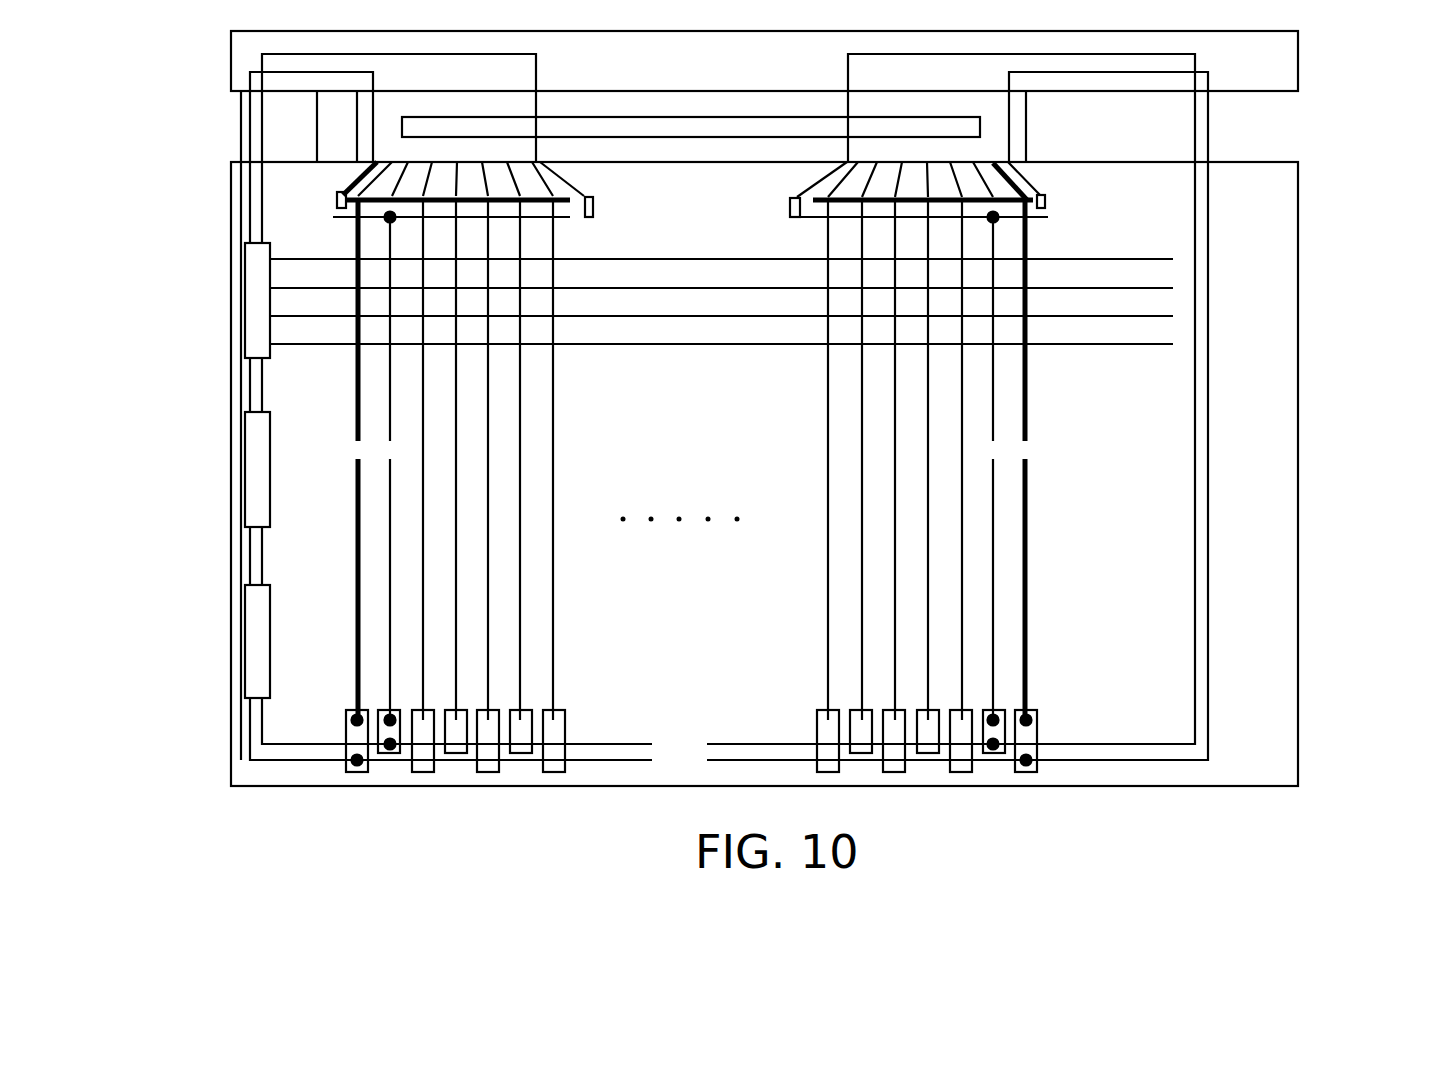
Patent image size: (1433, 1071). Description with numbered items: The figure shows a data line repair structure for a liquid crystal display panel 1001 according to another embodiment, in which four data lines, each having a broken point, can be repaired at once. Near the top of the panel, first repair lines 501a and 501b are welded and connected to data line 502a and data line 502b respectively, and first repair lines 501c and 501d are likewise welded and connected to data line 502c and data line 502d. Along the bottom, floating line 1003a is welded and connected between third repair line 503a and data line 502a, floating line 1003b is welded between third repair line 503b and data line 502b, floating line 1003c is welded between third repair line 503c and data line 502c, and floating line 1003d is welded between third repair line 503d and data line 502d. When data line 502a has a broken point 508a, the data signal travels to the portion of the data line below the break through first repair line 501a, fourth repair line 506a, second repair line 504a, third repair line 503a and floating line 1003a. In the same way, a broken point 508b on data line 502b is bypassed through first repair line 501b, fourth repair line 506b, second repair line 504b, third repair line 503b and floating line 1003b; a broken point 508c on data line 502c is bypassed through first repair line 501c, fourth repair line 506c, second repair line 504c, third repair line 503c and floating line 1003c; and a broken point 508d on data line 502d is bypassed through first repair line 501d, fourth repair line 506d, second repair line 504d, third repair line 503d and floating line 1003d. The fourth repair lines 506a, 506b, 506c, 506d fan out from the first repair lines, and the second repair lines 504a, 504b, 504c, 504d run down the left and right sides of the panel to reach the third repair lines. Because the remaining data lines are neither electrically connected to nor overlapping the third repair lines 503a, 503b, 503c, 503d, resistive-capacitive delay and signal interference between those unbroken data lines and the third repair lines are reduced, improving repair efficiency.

The display panel 1001 is at (1298, 546).
The first repair line 501a is at (566, 206).
The first repair line 501b is at (335, 217).
The first repair line 501c is at (1022, 174).
The first repair line 501d is at (805, 218).
The data line 502a is at (355, 372).
The data line 502b is at (388, 398).
The data line 502c is at (1028, 375).
The data line 502d is at (993, 411).
The third repair line 503a is at (295, 759).
The third repair line 503b is at (300, 742).
The third repair line 503c is at (1168, 759).
The third repair line 503d is at (1147, 743).
The second repair line 504a is at (262, 192).
The second repair line 504b is at (262, 213).
The second repair line 504c is at (1208, 407).
The second repair line 504d is at (1197, 452).
The fourth repair line 506a is at (340, 182).
The fourth repair line 506b is at (565, 186).
The fourth repair line 506c is at (1012, 172).
The fourth repair line 506d is at (823, 177).
The broken point 508a is at (340, 452).
The broken point 508b is at (402, 452).
The broken point 508c is at (1040, 448).
The broken point 508d is at (1005, 448).
The floating line 1003a is at (347, 747).
The floating line 1003b is at (389, 755).
The floating line 1003c is at (1035, 748).
The floating line 1003d is at (993, 753).